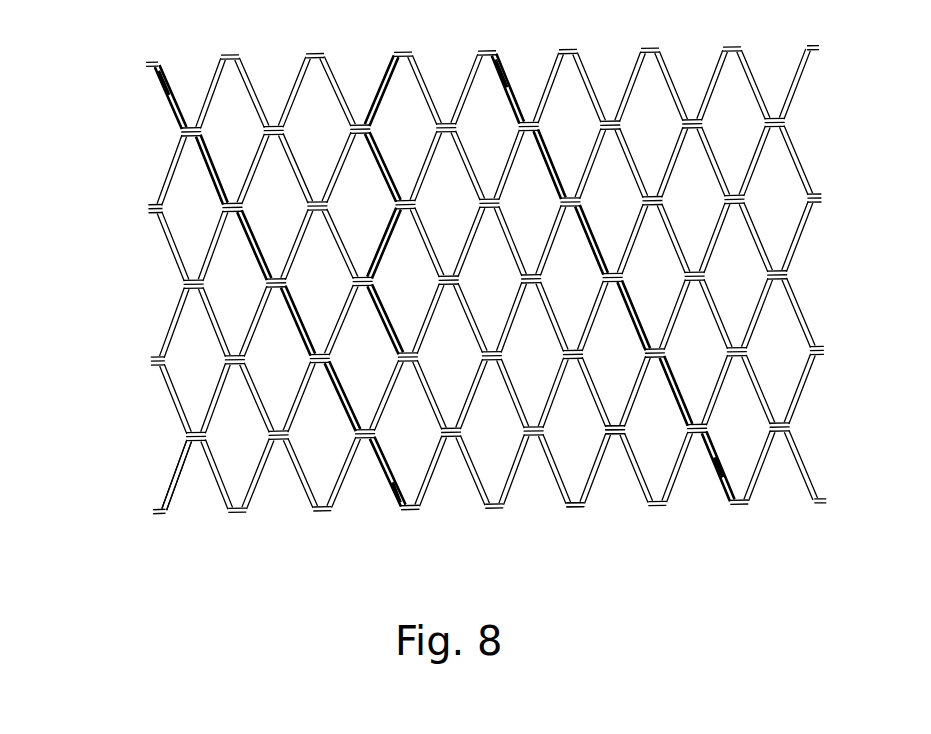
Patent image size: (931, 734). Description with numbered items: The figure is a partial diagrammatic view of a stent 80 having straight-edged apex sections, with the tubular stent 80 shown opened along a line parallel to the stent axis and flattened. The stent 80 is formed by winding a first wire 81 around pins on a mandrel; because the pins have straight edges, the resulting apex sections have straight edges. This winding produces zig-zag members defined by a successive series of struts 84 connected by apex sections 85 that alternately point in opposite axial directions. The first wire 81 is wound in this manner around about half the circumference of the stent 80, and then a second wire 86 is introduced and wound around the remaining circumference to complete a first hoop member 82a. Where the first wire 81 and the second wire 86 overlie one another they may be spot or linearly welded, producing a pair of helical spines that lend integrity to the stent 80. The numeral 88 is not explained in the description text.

The stent 80 is at (130, 177).
The first wire 81 is at (384, 463).
The first hoop member 82a is at (147, 476).
The strut 84 is at (565, 558).
The apex section 85 is at (415, 513).
The second wire 86 is at (395, 495).
The marker 88 is at (152, 62).